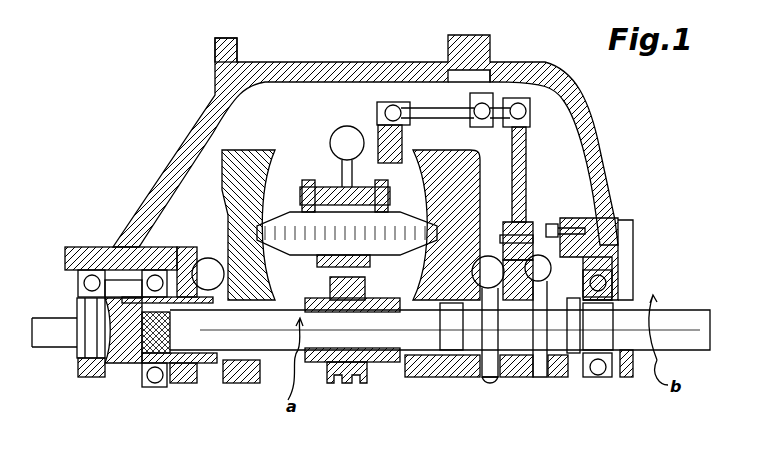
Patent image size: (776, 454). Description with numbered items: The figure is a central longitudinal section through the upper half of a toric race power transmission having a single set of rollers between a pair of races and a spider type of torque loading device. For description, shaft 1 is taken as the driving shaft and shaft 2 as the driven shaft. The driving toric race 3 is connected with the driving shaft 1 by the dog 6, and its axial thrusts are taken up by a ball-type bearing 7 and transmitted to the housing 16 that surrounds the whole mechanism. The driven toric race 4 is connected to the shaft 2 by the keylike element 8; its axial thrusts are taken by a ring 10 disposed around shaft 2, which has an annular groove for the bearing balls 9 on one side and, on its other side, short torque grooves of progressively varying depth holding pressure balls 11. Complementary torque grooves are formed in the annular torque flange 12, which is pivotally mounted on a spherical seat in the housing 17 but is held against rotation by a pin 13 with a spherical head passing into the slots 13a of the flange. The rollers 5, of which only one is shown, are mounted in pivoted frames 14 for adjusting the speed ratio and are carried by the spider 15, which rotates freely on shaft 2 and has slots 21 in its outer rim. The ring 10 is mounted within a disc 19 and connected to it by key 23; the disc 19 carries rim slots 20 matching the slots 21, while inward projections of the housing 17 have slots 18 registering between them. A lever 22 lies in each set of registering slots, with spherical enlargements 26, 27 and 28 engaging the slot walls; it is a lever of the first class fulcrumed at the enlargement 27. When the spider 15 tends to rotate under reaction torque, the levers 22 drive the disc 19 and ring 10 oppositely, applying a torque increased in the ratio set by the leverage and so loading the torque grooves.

The driving shaft 1 is at (88, 313).
The driven shaft 2 is at (683, 317).
The toric race 3 is at (220, 157).
The driven race 4 is at (455, 162).
The rollers 5 is at (287, 223).
The dog 6 is at (223, 292).
The bearing 7 is at (192, 250).
The keylike element 8 is at (470, 293).
The bearing balls 9 is at (497, 375).
The ring 10 is at (490, 258).
The pressure balls 11 is at (560, 243).
The annular torque flange 12 is at (593, 267).
The pin 13 is at (603, 202).
The slots 13a is at (573, 213).
The pivoted frames 14 is at (327, 187).
The spider 15 is at (390, 300).
The housing 16 is at (267, 72).
The housing 17 is at (593, 140).
The slots 18 is at (493, 95).
The disc 19 is at (526, 140).
The slots 20 is at (527, 118).
The slots 21 is at (380, 127).
The lever 22 is at (430, 108).
The key 23 is at (513, 220).
The spherical enlargement 26 is at (393, 105).
The spherical enlargement 27 is at (482, 103).
The spherical enlargement 28 is at (530, 102).